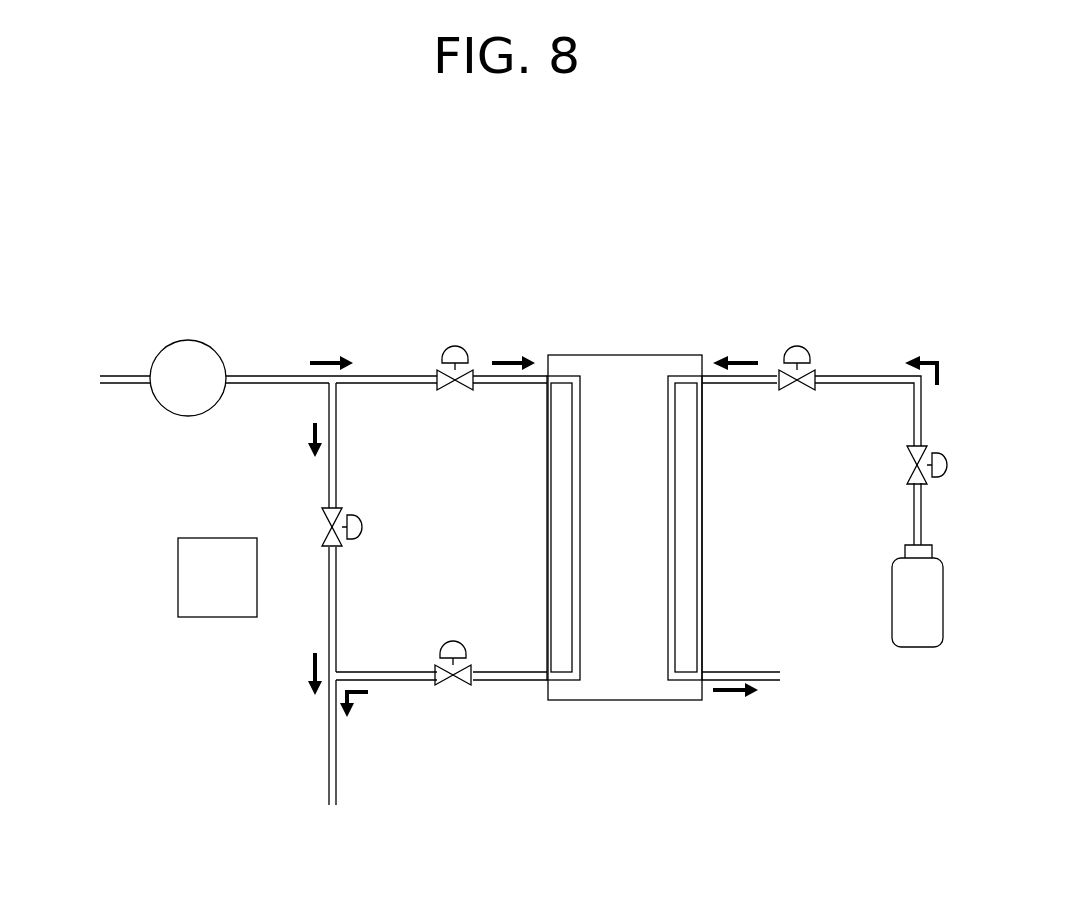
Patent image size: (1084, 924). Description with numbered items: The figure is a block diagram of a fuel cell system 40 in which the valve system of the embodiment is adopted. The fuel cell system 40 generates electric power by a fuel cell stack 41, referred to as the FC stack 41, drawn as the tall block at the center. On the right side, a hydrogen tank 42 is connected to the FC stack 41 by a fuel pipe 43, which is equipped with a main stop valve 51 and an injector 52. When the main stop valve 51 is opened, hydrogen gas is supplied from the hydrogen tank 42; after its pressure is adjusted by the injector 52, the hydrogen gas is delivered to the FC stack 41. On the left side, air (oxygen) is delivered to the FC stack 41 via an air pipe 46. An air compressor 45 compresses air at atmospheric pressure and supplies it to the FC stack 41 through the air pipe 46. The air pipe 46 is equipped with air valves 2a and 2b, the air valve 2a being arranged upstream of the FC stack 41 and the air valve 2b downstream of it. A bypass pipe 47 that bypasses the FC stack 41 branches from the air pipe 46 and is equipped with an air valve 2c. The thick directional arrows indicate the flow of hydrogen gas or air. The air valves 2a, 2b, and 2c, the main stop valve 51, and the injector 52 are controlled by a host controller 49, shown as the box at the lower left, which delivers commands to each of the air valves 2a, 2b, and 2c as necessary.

The fuel cell system 40 is at (129, 214).
The air compressor 45 is at (190, 340).
The air pipe 46 is at (385, 373).
The air valve 2a is at (443, 389).
The fuel cell stack 41 is at (626, 355).
The bypass pipe 47 is at (337, 608).
The air valve 2c is at (325, 525).
The air valve 2b is at (445, 690).
The host controller 49 is at (217, 617).
The fuel pipe 43 is at (867, 375).
The injector 52 is at (790, 388).
The main stop valve 51 is at (912, 468).
The hydrogen tank 42 is at (892, 605).